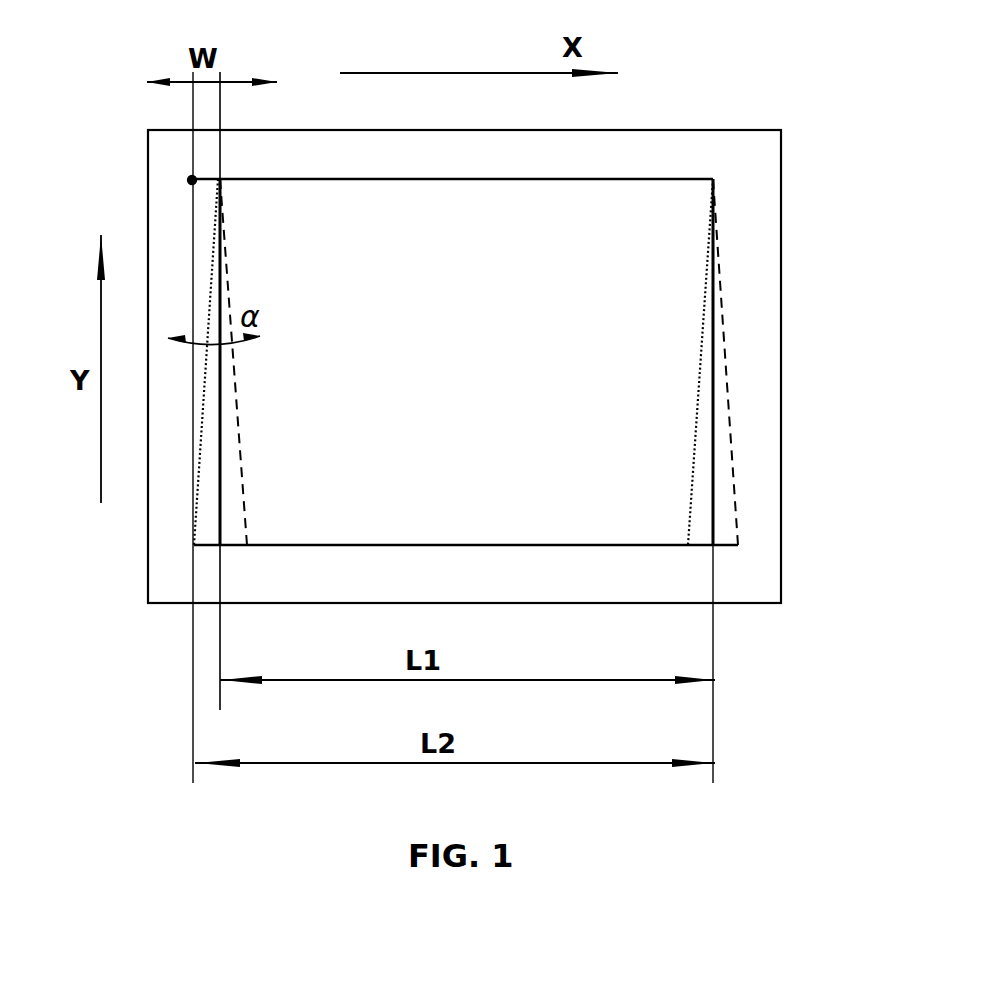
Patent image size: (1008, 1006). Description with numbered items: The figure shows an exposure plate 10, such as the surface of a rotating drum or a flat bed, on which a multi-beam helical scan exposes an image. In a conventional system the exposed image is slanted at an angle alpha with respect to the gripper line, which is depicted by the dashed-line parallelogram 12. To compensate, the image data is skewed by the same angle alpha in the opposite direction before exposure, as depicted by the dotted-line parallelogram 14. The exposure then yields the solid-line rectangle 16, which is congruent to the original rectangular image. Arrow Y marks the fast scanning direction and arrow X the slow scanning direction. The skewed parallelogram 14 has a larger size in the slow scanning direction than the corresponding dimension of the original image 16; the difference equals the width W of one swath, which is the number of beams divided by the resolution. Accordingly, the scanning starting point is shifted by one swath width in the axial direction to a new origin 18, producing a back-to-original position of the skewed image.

The exposure plate 10 is at (650, 130).
The dashed-line parallelogram 12 is at (738, 513).
The dotted-line parallelogram 14 is at (200, 450).
The solid-line rectangle 16 is at (713, 438).
The new origin 18 is at (192, 180).